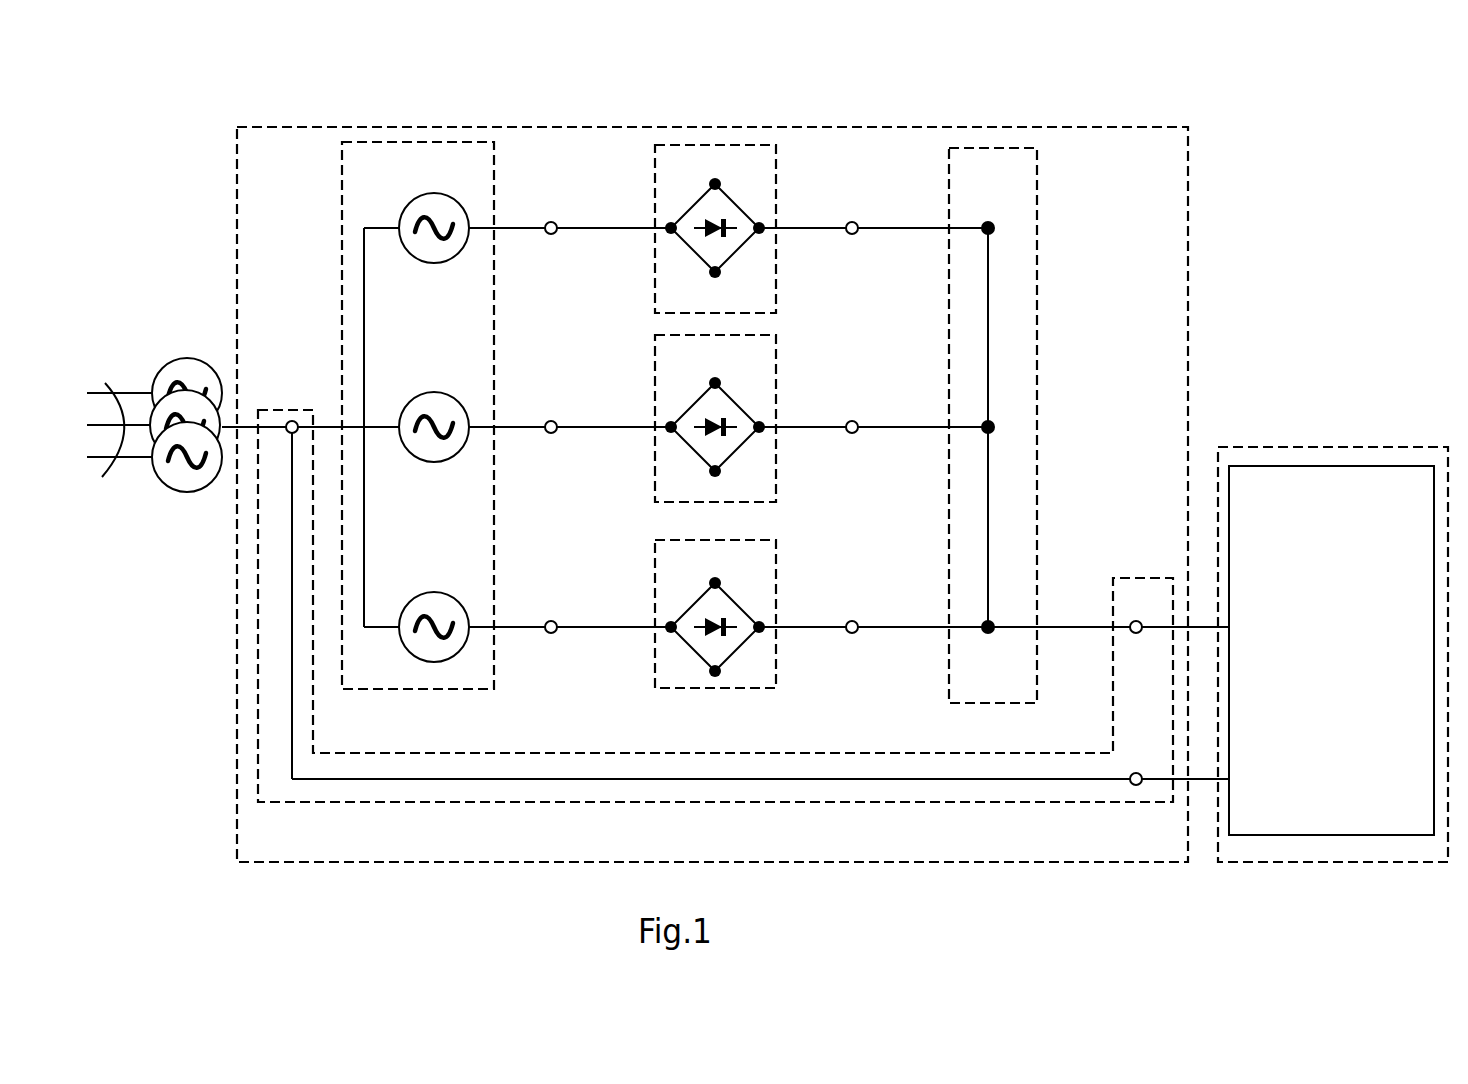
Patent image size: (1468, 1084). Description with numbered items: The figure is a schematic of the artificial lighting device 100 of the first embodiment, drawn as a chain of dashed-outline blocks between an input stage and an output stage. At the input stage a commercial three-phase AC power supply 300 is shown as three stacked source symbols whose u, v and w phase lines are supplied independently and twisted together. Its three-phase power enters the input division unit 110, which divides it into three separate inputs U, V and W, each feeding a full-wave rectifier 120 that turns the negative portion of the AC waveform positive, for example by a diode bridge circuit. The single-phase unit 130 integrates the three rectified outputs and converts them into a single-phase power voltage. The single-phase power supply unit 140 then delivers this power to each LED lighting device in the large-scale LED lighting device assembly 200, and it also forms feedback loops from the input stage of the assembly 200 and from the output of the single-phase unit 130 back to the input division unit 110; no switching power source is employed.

The artificial lighting device 100 is at (1190, 143).
The input division unit 110 is at (420, 142).
The full-wave rectifier 120 is at (710, 144).
The single-phase unit 130 is at (1013, 148).
The single-phase power supply unit 140 is at (1128, 576).
The large-scale LED lighting device assembly 200 is at (1302, 447).
The commercial three-phase AC power supply 300 is at (172, 360).